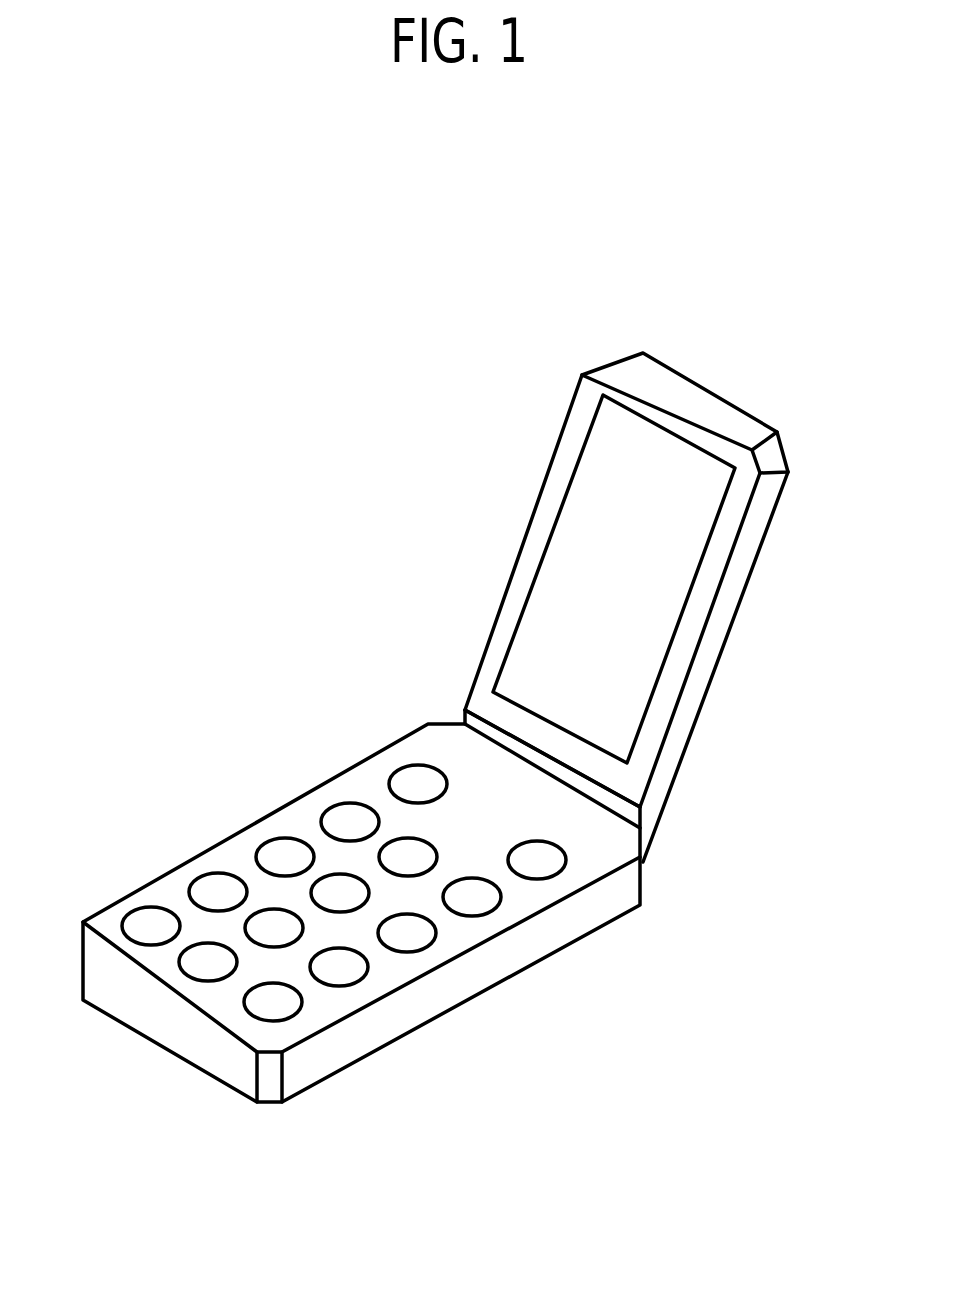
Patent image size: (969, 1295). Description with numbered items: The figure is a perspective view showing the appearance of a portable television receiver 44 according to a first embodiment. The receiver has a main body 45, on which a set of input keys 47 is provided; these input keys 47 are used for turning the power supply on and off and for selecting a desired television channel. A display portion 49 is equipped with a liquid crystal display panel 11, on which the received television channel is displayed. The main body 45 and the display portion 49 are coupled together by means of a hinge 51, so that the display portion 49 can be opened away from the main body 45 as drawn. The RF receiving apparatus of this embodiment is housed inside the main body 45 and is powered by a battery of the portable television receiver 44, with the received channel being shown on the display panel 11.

The liquid crystal display panel 11 is at (615, 493).
The portable television receiver 44 is at (728, 380).
The main body 45 is at (477, 983).
The input keys 47 is at (280, 855).
The display portion 49 is at (728, 600).
The hinge 51 is at (645, 832).